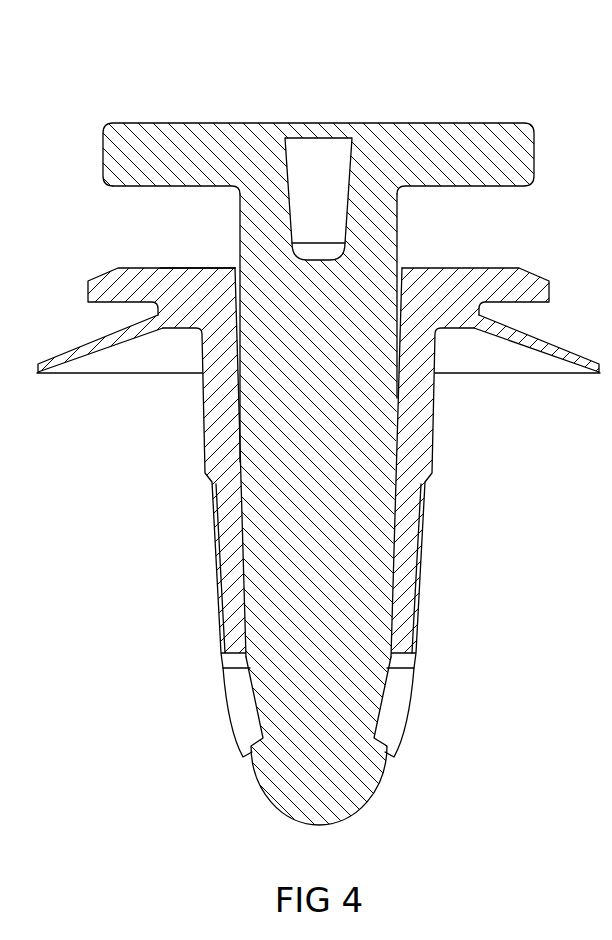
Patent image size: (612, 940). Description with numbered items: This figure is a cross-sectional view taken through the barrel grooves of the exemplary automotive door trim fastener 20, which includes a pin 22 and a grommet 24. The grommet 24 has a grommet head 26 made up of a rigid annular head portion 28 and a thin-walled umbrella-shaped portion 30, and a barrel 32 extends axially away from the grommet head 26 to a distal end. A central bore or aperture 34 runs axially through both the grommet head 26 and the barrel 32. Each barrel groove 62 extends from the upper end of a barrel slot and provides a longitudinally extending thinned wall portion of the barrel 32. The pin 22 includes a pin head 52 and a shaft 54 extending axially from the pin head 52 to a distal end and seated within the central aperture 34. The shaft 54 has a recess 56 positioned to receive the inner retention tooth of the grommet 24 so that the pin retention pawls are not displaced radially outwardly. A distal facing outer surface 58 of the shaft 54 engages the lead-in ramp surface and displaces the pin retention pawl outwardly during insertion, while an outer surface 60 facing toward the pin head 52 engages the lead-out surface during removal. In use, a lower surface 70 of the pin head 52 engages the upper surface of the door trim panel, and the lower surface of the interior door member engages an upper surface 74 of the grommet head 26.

The automotive door trim fastener 20 is at (304, 418).
The pin 22 is at (317, 151).
The grommet 24 is at (532, 268).
The grommet head 26 is at (512, 343).
The rigid annular head portion 28 is at (108, 287).
The thin-walled umbrella-shaped portion 30 is at (68, 355).
The barrel 32 is at (214, 440).
The central bore or aperture 34 is at (396, 484).
The pin head 52 is at (128, 157).
The shaft 54 is at (292, 486).
The recess 56 is at (396, 733).
The distal facing outer surface 58 is at (384, 772).
The outer surface facing toward the pin head 60 is at (241, 750).
The barrel groove 62 is at (425, 547).
The lower surface of the pin head 70 is at (155, 188).
The upper surface of the grommet head 74 is at (200, 267).